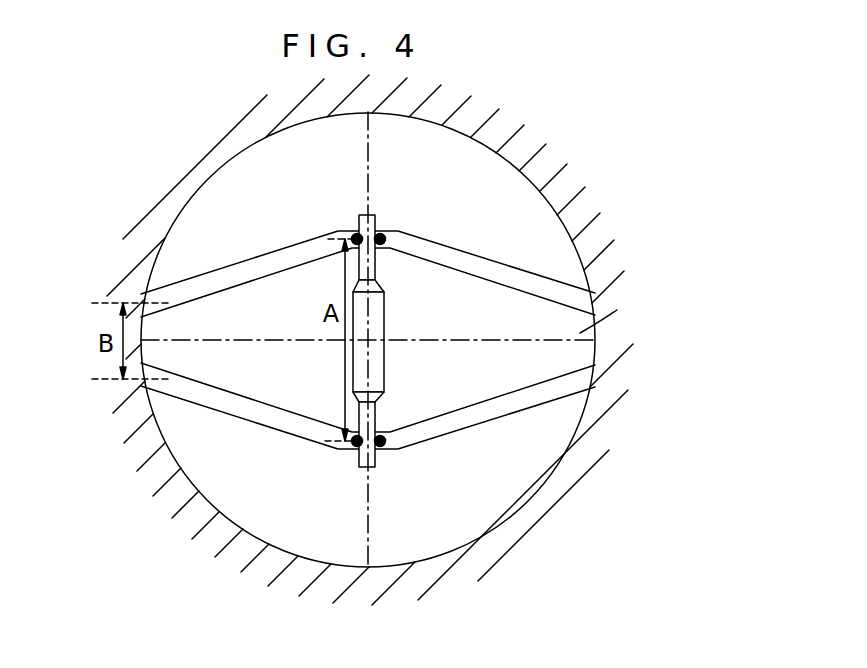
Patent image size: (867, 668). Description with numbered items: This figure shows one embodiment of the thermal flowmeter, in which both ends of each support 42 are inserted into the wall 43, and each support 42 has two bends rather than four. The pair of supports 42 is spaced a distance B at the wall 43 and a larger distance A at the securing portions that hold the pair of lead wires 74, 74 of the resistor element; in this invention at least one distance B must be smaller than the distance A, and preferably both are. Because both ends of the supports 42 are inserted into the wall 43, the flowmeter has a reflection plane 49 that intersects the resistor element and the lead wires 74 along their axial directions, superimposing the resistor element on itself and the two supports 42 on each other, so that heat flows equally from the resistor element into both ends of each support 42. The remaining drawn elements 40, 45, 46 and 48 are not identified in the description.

The housing 40 is at (385, 340).
The support 42 is at (229, 281).
The wall 43 is at (142, 417).
The cylindrical bore wall 45 is at (522, 476).
The ball 46 is at (383, 238).
The opening 48 is at (593, 342).
The reflection plane 49 is at (370, 548).
The lead wire 74 is at (363, 215).